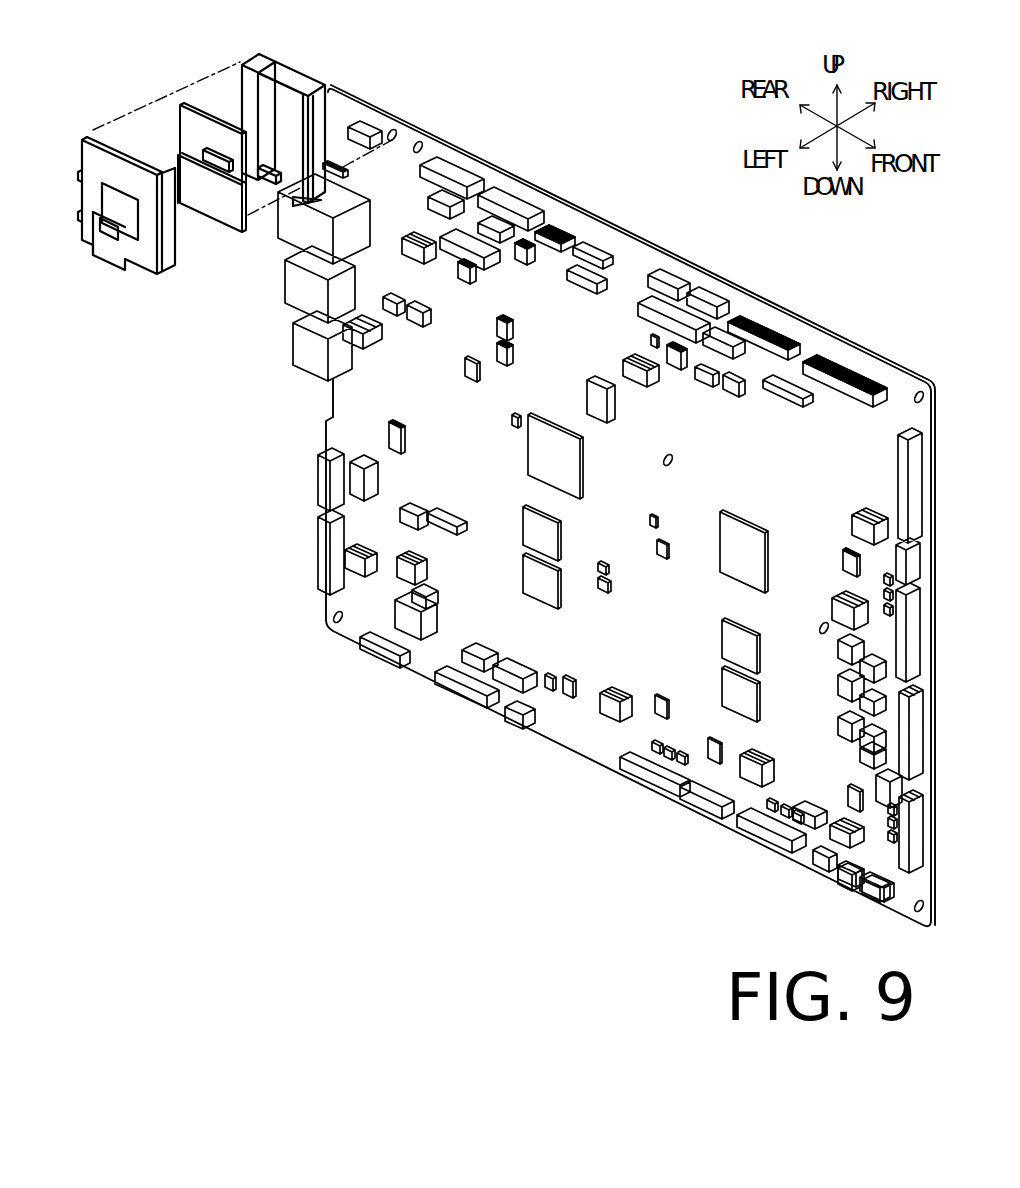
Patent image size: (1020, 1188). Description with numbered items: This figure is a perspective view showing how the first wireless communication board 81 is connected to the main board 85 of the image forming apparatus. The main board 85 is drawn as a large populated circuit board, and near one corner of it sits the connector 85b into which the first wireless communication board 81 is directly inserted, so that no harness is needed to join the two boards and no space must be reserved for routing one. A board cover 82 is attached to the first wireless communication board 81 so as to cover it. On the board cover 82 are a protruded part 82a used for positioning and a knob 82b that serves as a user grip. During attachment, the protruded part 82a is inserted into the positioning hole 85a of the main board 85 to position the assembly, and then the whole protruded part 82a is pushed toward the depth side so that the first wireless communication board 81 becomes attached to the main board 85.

The first wireless communication board 81 is at (210, 200).
The board cover 82 is at (141, 249).
The protruded part 82a is at (338, 160).
The knob 82b is at (102, 247).
The main board 85 is at (584, 730).
The positioning hole 85a is at (427, 181).
The connector 85b is at (348, 137).